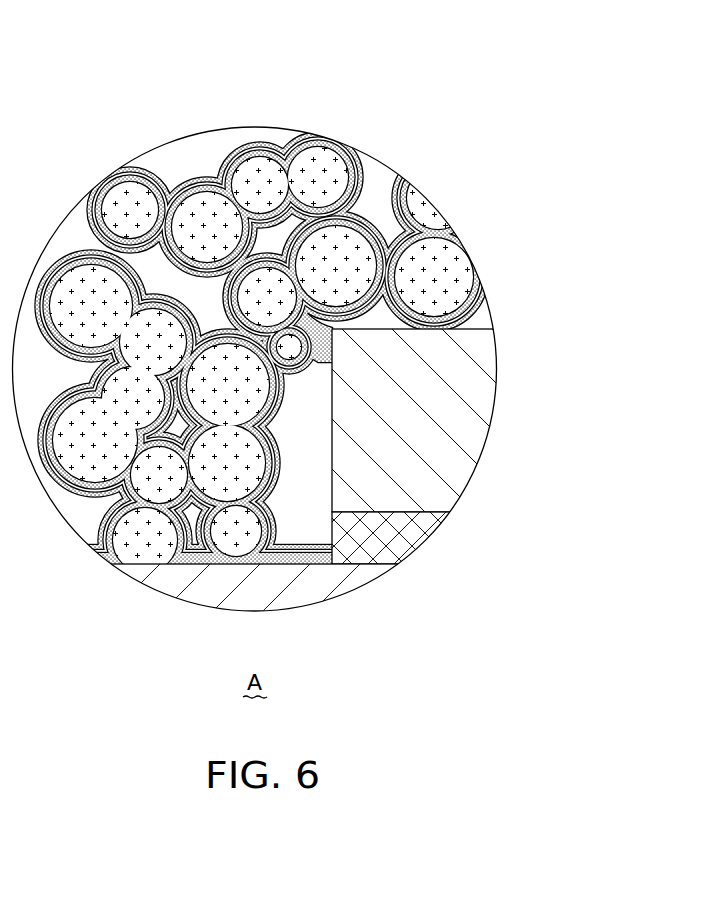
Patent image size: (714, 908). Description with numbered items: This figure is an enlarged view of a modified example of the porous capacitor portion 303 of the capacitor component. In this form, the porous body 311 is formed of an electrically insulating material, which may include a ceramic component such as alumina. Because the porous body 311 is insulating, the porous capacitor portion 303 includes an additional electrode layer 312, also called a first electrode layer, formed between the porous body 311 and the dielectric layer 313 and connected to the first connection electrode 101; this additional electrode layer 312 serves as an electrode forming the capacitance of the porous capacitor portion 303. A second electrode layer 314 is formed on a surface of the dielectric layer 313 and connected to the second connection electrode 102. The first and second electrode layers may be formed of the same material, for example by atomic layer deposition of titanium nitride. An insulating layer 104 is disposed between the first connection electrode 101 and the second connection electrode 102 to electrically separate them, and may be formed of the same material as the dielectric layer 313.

The porous capacitor portion 303 is at (244, 305).
The porous body 311 is at (173, 63).
The additional electrode layer 312 is at (290, 145).
The dielectric layer 313 is at (260, 140).
The electrode layer 314 is at (187, 173).
The second connection electrode 102 is at (470, 420).
The insulating layer 104 is at (418, 545).
The first connection electrode 101 is at (347, 587).